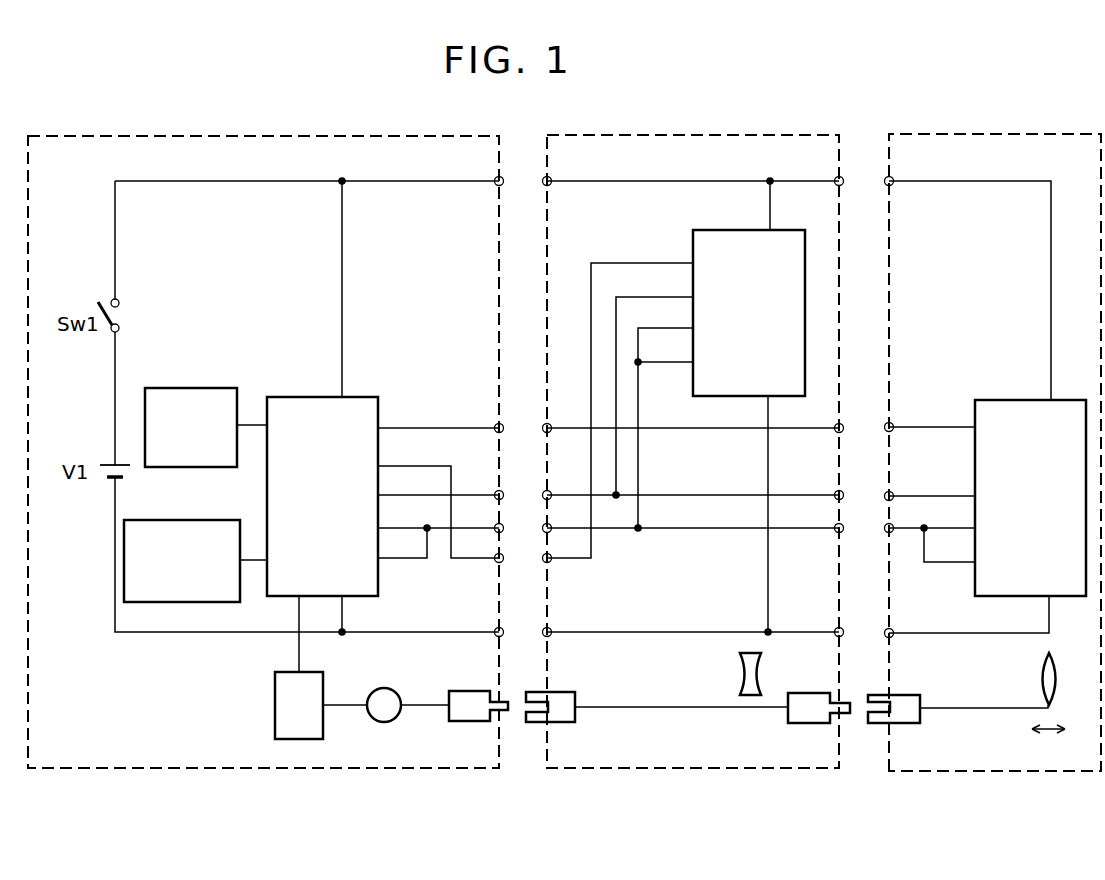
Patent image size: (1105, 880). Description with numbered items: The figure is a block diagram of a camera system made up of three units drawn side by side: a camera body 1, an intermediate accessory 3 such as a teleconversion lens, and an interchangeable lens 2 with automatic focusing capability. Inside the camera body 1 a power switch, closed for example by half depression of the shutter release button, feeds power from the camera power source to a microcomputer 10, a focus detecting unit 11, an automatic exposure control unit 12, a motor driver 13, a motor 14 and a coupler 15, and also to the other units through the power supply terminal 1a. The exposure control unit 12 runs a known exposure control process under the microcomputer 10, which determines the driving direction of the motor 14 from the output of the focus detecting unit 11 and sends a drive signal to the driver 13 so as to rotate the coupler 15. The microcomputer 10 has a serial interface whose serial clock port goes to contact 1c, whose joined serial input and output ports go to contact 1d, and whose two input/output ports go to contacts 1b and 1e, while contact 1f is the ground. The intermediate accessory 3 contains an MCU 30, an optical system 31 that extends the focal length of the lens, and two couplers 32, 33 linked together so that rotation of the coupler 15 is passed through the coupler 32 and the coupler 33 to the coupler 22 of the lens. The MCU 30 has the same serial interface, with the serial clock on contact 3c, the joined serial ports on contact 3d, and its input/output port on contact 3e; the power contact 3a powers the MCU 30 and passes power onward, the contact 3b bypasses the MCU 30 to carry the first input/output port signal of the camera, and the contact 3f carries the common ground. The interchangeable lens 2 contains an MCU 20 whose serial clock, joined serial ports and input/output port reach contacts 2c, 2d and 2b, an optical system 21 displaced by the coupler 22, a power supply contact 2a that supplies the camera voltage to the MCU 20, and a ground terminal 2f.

The camera body 1 is at (63, 135).
The interchangeable lens 2 is at (952, 134).
The intermediate accessory 3 is at (607, 133).
The microcomputer (MCU) 10 is at (297, 397).
The focus detecting unit 11 is at (178, 388).
The automatic exposure control unit 12 is at (205, 520).
The motor driver 13 is at (278, 741).
The motor 14 is at (384, 722).
The coupler 15 is at (468, 712).
The MCU 20 is at (999, 400).
The optical system 21 is at (1059, 666).
The coupler 22 is at (893, 723).
The MCU 30 is at (805, 295).
The optical system 31 is at (761, 666).
The coupler 32 is at (550, 722).
The coupler 33 is at (808, 712).
The electrical contact 1a is at (496, 196).
The electrical contact 1b is at (496, 441).
The electrical contact 1c is at (496, 509).
The electrical contact 1d is at (496, 540).
The electrical contact 1e is at (496, 572).
The electrical contact 1f is at (494, 648).
The electrical contact 2a is at (885, 196).
The electrical contact 2b is at (883, 441).
The electrical contact 2c is at (883, 509).
The electrical contact 2d is at (883, 541).
The electrical contact 2f is at (883, 649).
The electrical contact 3a is at (853, 184).
The electrical contact 3b is at (853, 428).
The electrical contact 3c is at (853, 495).
The electrical contact 3d is at (853, 528).
The electrical contact 3e is at (543, 572).
The electrical contact 3f is at (851, 637).